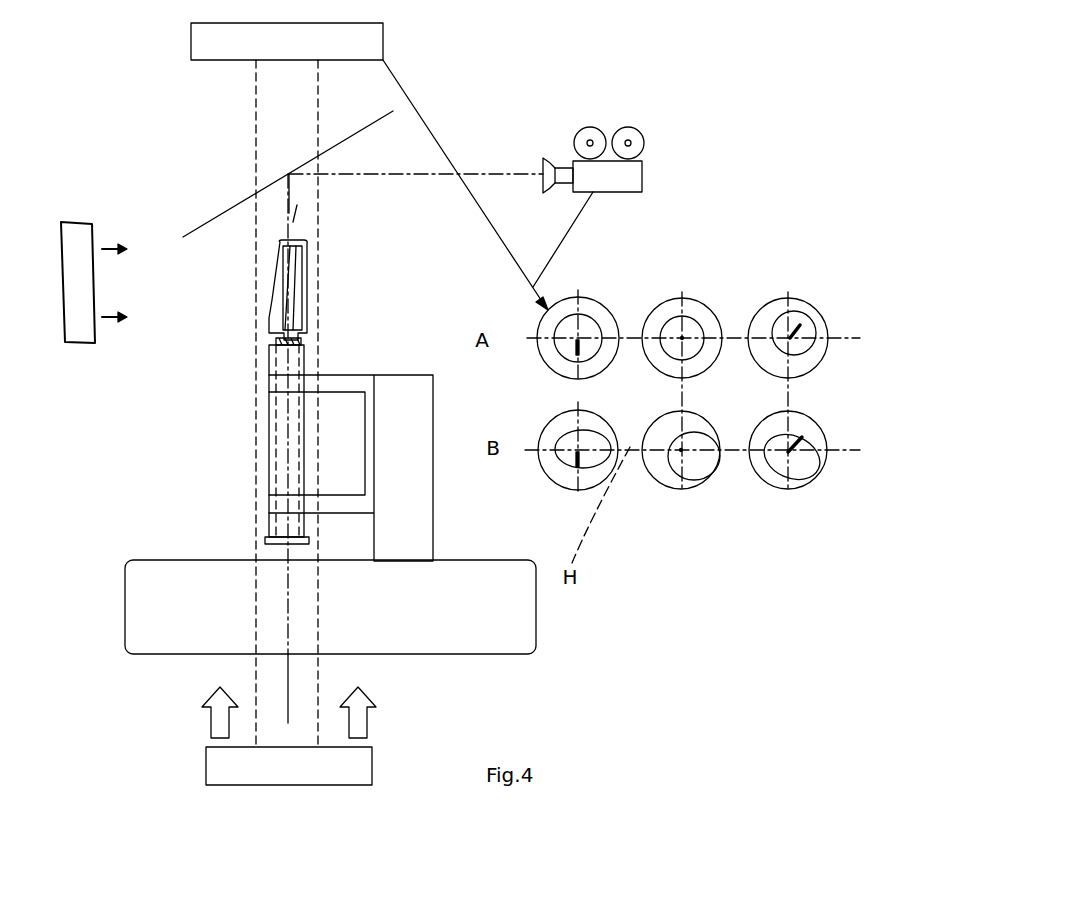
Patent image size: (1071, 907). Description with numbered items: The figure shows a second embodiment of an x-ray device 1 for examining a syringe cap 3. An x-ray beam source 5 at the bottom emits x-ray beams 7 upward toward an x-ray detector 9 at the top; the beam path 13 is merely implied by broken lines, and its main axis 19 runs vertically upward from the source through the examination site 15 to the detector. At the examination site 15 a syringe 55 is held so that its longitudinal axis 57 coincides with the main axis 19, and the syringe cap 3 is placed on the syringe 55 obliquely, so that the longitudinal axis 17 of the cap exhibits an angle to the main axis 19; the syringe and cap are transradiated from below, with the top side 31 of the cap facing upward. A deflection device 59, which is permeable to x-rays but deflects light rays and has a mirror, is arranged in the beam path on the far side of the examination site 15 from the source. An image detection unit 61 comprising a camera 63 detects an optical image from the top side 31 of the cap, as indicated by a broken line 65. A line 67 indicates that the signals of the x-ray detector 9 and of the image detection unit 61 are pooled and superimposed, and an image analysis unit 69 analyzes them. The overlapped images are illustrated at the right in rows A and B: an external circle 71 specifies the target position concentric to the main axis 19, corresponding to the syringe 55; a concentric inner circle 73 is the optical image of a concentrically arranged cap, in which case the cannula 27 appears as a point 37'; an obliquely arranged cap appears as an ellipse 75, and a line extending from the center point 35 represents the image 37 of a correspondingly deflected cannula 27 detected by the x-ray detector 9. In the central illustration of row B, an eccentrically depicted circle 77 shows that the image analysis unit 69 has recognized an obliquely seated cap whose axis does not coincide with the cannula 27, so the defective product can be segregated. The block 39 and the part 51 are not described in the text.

The x-ray device 1 is at (206, 514).
The syringe cap 3 is at (277, 262).
The x-ray beam source 5 is at (306, 775).
The x-ray beams 7 is at (270, 723).
The x-ray detector 9 is at (277, 53).
The beam path 13 is at (255, 375).
The examination site 15 is at (255, 437).
The longitudinal axis 17 is at (299, 217).
The main axis 19 is at (288, 671).
The cannula 27 is at (290, 273).
The top side 31 is at (300, 240).
The center point 35 is at (590, 330).
The image of cannula 37 is at (665, 402).
The point 37' is at (637, 465).
The drive block 39 is at (385, 467).
The workpiece supply 51 is at (94, 282).
The syringe 55 is at (270, 410).
The longitudinal axis 57 is at (285, 465).
The deflection device 59 is at (237, 203).
The image detection unit 61 is at (642, 120).
The camera 63 is at (642, 174).
The broken line 65 is at (411, 173).
The line 67 is at (535, 288).
The image analysis unit 69 is at (546, 251).
The external circle 71 is at (583, 332).
The inner circle 73 is at (697, 322).
The ellipse 75 is at (552, 353).
The circle 77 is at (683, 478).